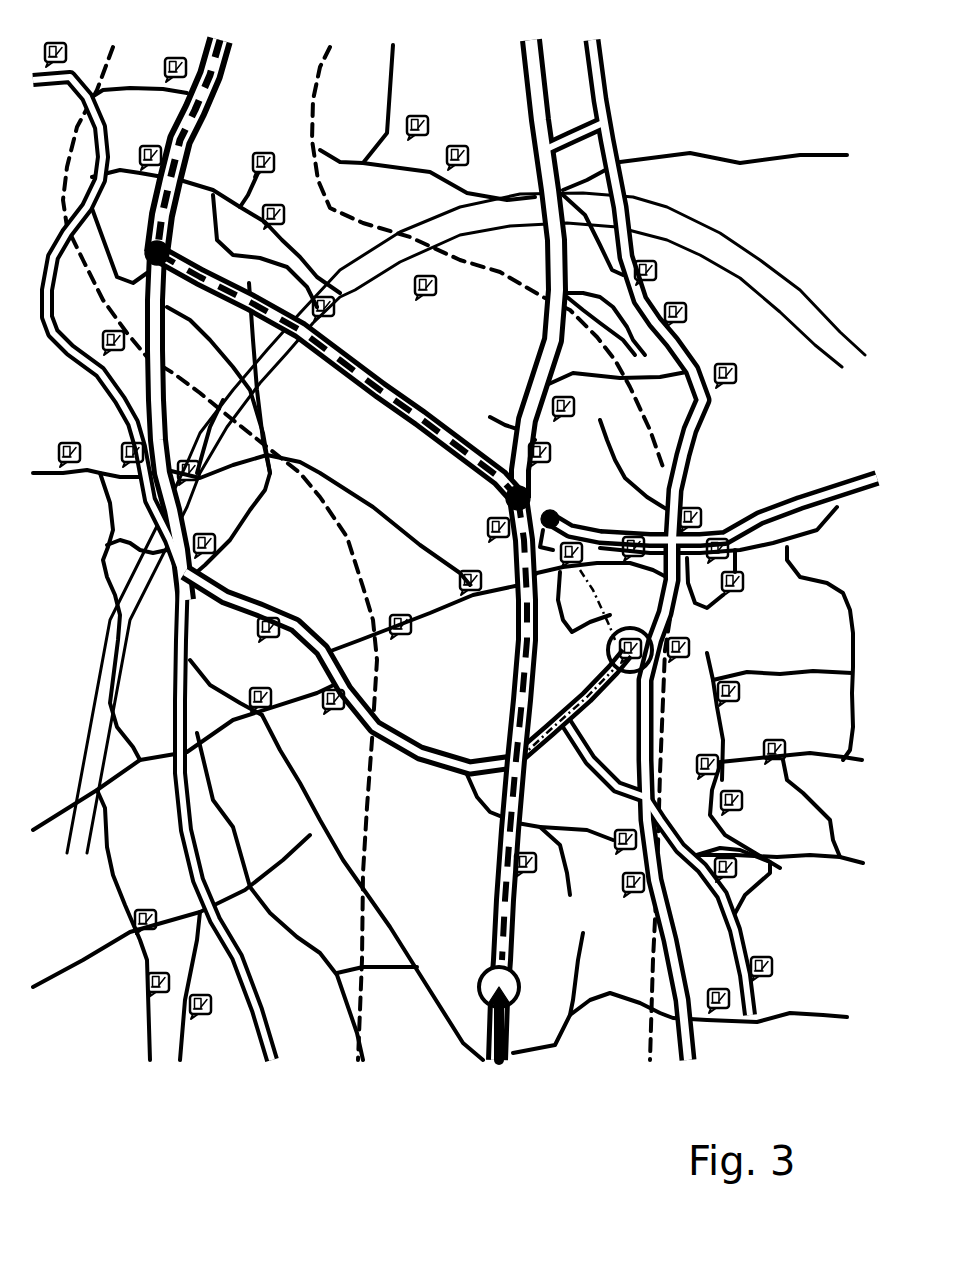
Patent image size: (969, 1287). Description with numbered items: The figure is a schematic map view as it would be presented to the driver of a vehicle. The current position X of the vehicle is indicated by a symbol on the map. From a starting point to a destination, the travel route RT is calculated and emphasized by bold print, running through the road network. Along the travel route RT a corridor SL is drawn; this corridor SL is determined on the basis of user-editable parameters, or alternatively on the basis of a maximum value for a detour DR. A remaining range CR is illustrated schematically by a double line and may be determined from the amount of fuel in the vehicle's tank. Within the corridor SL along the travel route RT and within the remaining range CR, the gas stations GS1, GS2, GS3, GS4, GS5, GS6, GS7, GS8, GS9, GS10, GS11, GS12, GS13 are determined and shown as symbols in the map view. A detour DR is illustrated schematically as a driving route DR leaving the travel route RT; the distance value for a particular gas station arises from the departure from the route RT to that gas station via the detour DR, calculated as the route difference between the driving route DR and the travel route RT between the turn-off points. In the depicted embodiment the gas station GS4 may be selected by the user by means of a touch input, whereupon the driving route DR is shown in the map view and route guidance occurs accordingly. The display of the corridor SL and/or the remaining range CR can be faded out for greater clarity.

The travel route RT is at (198, 113).
The corridor SL is at (323, 100).
The remaining range CR is at (740, 248).
The detour DR is at (605, 616).
The current position X is at (480, 996).
The gas station GS1 is at (527, 875).
The gas station GS2 is at (645, 895).
The gas station GS3 is at (607, 840).
The gas station GS4 is at (640, 690).
The gas station GS5 is at (710, 665).
The gas station GS6 is at (633, 533).
The gas station GS7 is at (570, 533).
The gas station GS8 is at (473, 597).
The gas station GS9 is at (393, 612).
The gas station GS10 is at (510, 493).
The gas station GS11 is at (540, 400).
The gas station GS12 is at (580, 410).
The gas station GS13 is at (413, 290).